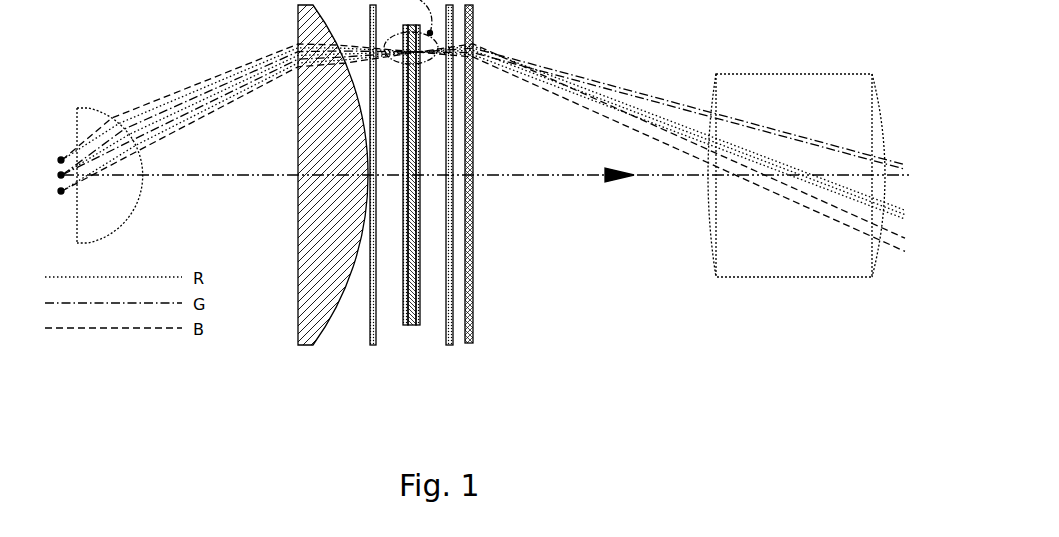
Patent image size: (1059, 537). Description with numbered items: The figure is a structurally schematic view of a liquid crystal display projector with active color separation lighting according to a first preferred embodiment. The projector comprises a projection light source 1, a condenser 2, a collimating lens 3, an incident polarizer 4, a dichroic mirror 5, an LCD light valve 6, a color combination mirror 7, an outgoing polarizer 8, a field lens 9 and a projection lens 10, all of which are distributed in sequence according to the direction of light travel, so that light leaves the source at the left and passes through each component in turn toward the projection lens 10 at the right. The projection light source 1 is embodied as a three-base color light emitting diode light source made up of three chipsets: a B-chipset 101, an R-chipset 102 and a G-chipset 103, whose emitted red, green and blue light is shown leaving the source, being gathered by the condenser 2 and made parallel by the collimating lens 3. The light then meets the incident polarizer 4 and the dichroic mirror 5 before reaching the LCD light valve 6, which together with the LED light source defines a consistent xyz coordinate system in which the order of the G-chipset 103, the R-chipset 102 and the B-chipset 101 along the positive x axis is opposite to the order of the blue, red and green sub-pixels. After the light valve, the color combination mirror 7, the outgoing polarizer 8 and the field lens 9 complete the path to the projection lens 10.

The projection light source 1 is at (81, 103).
The B-chipset 101 is at (61, 160).
The R-chipset 102 is at (61, 175).
The G-chipset 103 is at (61, 191).
The condenser 2 is at (135, 202).
The collimating lens 3 is at (298, 318).
The incident polarizer 4 is at (372, 323).
The dichroic mirror 5 is at (404, 325).
The LCD light valve 6 is at (411, 325).
The color combination mirror 7 is at (419, 325).
The outgoing polarizer 8 is at (449, 343).
The field lens 9 is at (472, 330).
The projection lens 10 is at (750, 268).